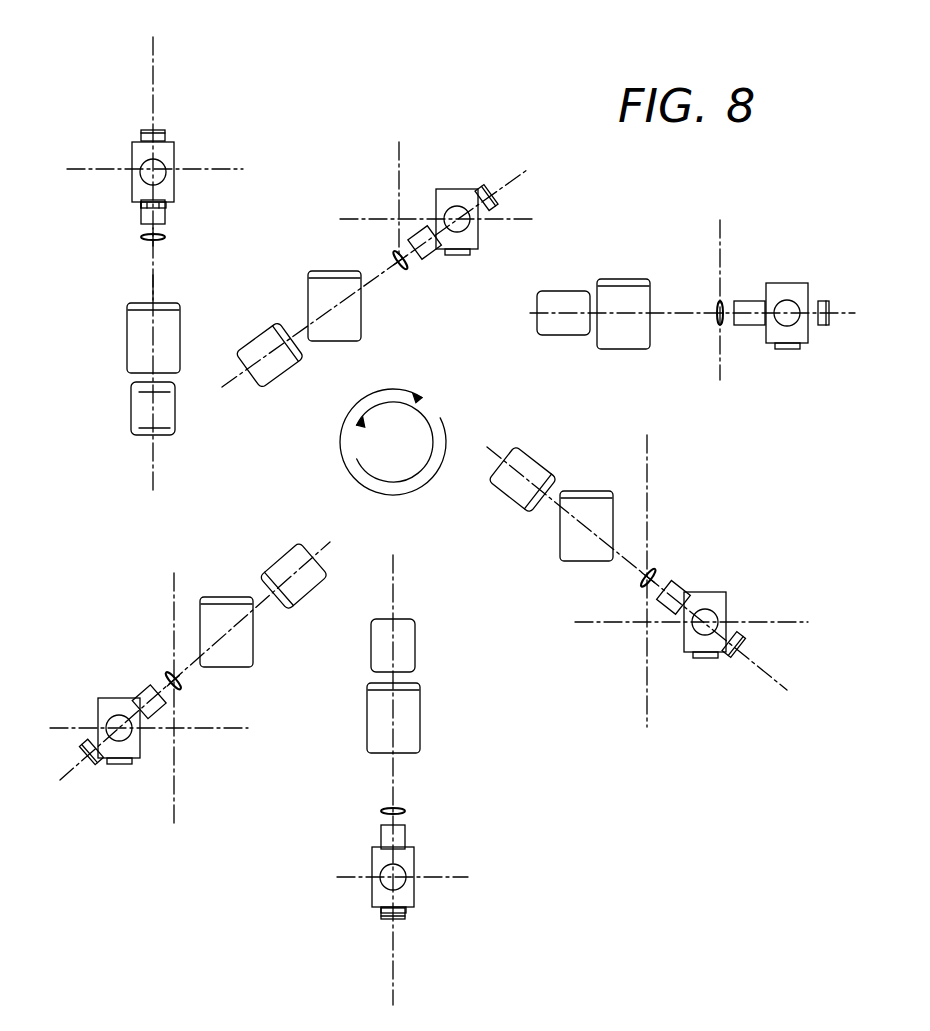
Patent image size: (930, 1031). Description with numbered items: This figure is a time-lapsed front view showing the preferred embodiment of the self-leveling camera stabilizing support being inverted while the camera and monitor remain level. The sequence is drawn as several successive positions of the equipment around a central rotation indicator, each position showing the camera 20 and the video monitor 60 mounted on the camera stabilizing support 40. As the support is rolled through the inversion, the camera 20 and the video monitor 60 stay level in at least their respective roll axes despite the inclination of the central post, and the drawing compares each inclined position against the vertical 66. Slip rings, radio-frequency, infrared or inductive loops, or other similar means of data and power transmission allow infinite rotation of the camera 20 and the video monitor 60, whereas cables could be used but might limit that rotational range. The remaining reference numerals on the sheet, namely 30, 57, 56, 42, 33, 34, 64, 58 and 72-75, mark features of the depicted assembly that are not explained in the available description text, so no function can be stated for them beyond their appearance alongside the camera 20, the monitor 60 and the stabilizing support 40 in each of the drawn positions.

The camera 20 is at (168, 150).
The video monitor 60 is at (127, 338).
The light source 30 is at (140, 425).
The aperture 57 is at (162, 238).
The optical axis 56 is at (153, 58).
The vertical 66 is at (153, 113).
The horizontal axis 42 is at (85, 169).
The camera base 33 is at (138, 203).
The lens mount 34 is at (163, 214).
The shutter 64 is at (143, 233).
The camera stabilizing support 40 is at (154, 284).
The housing 58 is at (140, 397).
The filter elements 72-75 is at (145, 434).